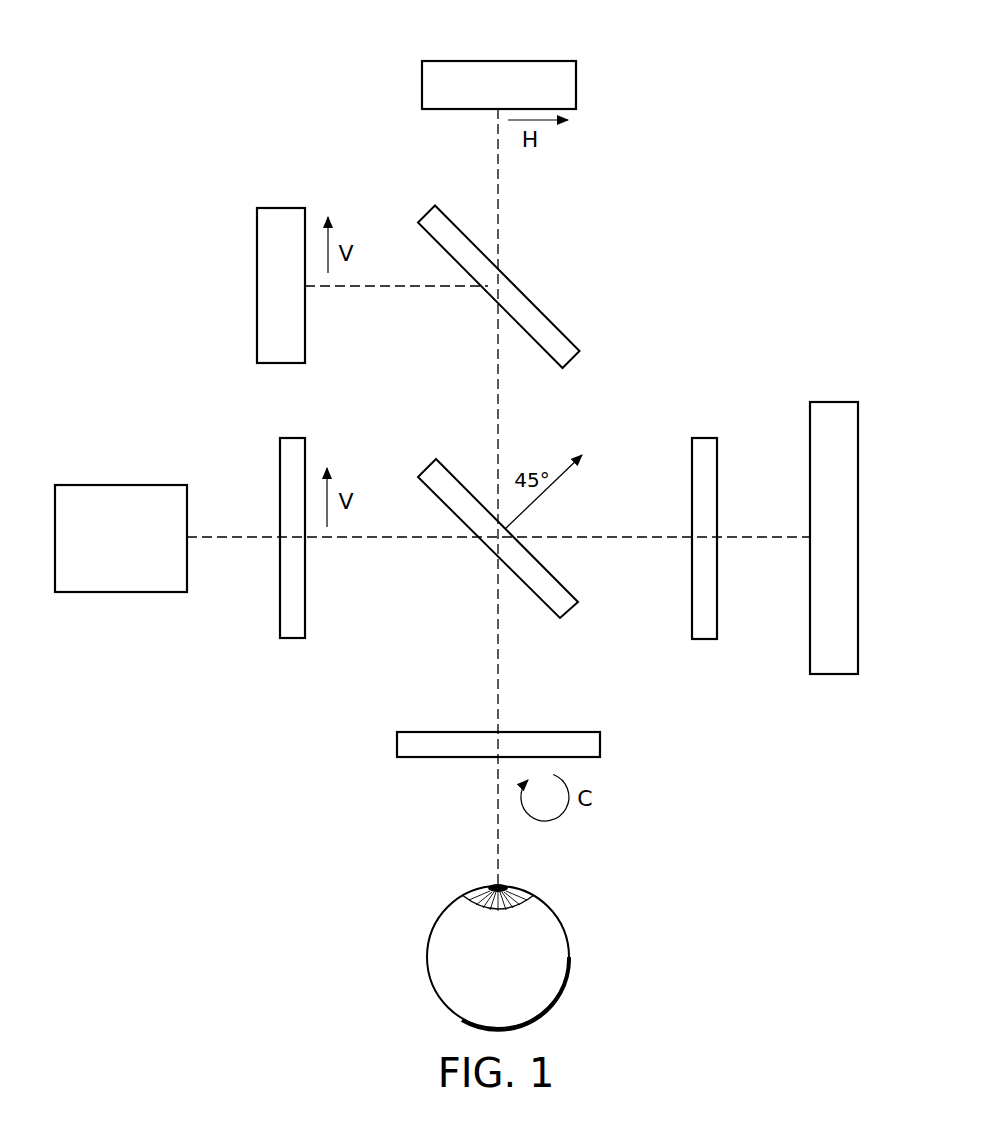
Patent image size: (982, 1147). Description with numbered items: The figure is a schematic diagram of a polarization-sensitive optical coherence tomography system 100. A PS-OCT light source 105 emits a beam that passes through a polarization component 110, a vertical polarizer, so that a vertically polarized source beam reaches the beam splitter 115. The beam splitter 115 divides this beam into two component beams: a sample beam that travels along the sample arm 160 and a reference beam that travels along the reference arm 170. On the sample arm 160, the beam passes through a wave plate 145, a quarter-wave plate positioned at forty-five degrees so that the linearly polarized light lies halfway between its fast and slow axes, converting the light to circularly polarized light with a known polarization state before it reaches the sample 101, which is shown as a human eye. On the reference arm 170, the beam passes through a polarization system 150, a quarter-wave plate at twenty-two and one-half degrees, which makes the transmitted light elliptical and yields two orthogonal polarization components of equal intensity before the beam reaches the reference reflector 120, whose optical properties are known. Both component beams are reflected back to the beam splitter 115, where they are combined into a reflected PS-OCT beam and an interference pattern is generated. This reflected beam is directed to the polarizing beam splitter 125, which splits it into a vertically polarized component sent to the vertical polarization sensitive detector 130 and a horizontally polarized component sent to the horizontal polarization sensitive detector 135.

The PS-OCT system 100 is at (730, 80).
The sample 101 is at (427, 955).
The PS-OCT light source 105 is at (120, 593).
The polarization component 110 is at (290, 639).
The beam splitter 115 is at (568, 621).
The reference reflector 120 is at (835, 401).
The polarizing beam splitter 125 is at (428, 213).
The vertical polarization sensitive detector 130 is at (280, 208).
The horizontal polarization sensitive detector 135 is at (422, 83).
The wave plate 145 is at (601, 745).
The polarization system 150 is at (705, 437).
The sample arm 160 is at (498, 642).
The reference arm 170 is at (603, 537).